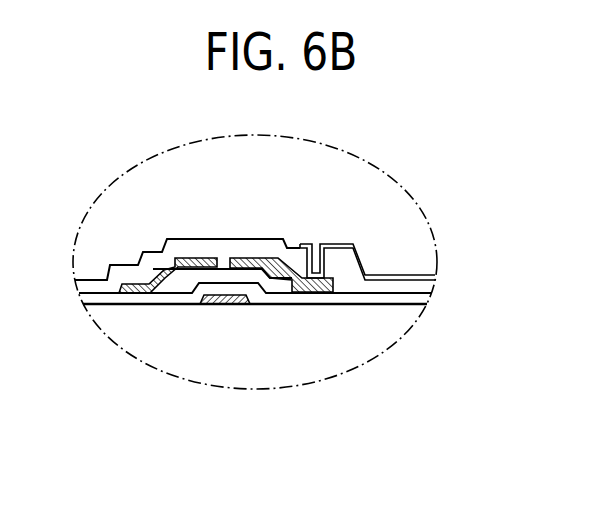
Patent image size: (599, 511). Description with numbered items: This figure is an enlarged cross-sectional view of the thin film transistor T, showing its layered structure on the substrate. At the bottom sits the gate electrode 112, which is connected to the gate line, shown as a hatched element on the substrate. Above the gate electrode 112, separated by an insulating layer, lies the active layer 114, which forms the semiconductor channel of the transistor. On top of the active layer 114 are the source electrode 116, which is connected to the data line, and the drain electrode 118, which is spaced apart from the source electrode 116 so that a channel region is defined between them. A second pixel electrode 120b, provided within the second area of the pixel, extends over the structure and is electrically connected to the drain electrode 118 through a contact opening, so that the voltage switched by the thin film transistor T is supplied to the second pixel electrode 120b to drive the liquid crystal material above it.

The thin film transistor T is at (127, 173).
The gate electrode 112 is at (224, 305).
The active layer 114 is at (229, 268).
The source electrode 116 is at (197, 257).
The drain electrode 118 is at (262, 258).
The second pixel electrode 120b is at (396, 274).